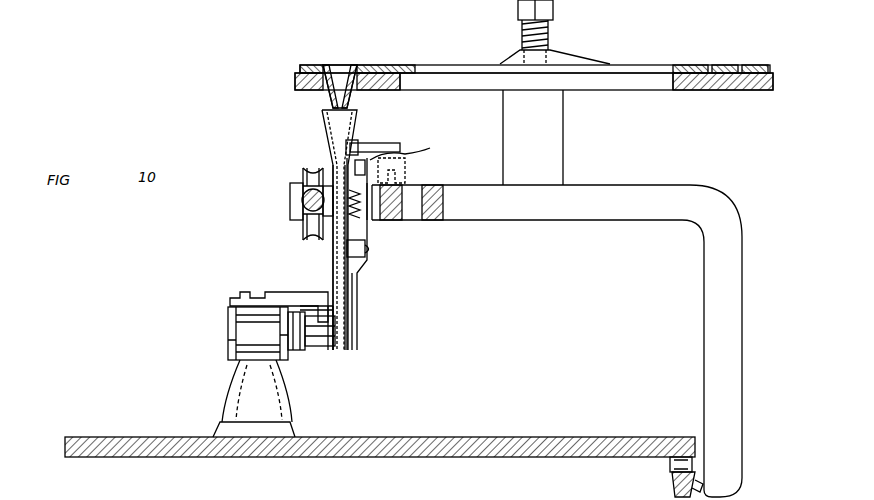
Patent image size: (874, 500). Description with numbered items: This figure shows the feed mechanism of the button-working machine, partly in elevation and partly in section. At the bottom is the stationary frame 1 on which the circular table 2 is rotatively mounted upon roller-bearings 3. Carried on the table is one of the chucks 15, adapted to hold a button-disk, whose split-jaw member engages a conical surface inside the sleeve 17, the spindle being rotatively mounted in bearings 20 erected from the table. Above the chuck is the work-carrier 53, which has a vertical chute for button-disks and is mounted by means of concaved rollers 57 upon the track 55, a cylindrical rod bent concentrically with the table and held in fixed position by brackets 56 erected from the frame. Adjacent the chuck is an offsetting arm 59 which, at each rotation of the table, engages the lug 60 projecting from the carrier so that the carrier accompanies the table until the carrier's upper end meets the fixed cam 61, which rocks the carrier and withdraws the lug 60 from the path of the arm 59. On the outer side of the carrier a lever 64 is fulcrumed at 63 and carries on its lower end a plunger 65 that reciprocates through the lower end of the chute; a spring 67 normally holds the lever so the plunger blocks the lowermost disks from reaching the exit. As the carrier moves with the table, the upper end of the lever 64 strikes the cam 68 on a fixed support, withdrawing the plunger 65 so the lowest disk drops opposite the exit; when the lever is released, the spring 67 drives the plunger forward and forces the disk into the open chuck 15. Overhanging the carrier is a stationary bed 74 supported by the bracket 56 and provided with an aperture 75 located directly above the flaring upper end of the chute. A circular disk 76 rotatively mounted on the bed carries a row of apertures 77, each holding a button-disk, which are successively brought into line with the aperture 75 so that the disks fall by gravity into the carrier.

The stationary frame 1 is at (672, 485).
The circular table 2 is at (355, 437).
The roller-bearings 3 is at (670, 465).
The chuck 15 is at (320, 348).
The sleeve 17 is at (298, 352).
The bearings 20 is at (228, 320).
The work-carrier 53 is at (333, 250).
The track 55 is at (303, 204).
The brackets 56 is at (290, 192).
The concaved rollers 57 is at (303, 175).
The offsetting arm 59 is at (280, 294).
The lug 60 is at (326, 296).
The fixed cam 61 is at (373, 145).
The fulcrum 63 is at (372, 249).
The lever 64 is at (355, 167).
The plunger 65 is at (357, 335).
The spring 67 is at (358, 215).
The cam 68 is at (403, 161).
The stationary table or bed 74 is at (643, 80).
The aperture 75 is at (326, 95).
The circular disk 76 is at (390, 66).
The apertures 77 is at (335, 66).